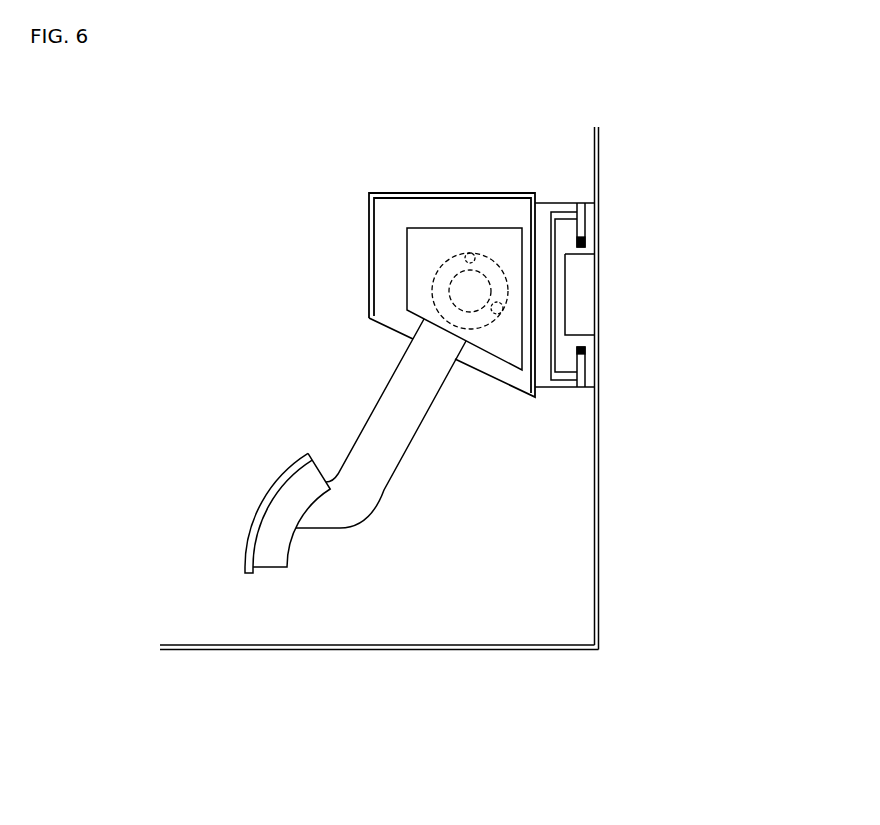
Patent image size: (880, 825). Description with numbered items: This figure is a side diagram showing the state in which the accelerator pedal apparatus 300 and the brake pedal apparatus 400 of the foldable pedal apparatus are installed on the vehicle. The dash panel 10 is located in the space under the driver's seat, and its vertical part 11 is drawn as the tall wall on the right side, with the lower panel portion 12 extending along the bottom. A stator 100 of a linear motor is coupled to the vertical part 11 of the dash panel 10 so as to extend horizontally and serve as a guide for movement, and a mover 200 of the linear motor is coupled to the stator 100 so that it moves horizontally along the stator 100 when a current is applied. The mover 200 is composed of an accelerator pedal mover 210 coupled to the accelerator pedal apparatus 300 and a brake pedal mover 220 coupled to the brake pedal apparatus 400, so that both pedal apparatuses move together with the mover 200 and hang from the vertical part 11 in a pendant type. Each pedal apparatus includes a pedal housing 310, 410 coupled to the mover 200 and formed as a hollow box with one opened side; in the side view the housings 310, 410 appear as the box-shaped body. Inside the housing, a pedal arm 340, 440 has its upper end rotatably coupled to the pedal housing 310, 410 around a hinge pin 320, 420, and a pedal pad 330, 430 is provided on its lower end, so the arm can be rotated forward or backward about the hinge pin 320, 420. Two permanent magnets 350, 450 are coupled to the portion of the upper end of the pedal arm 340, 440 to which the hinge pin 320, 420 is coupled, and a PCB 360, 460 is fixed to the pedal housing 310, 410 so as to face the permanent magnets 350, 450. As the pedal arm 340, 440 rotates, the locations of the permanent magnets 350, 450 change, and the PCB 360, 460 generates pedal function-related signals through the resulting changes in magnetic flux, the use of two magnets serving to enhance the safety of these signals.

The dash panel 10 is at (417, 423).
The vertical part 11 is at (600, 480).
The bottom of cabinet 12 is at (462, 650).
The stator 100 is at (558, 298).
The mover 200 is at (657, 285).
The accelerator pedal mover 210 is at (657, 285).
The brake pedal mover 220 is at (562, 203).
The accelerator pedal apparatus 300 is at (291, 446).
The brake pedal apparatus 400 is at (291, 446).
The pedal housing 310 is at (391, 295).
The pedal housing 410 is at (368, 200).
The hinge pin 320 is at (355, 291).
The hinge pin 420 is at (470, 290).
The pedal pad 330 is at (223, 513).
The pedal pad 430 is at (262, 510).
The pedal arm 340 is at (309, 423).
The pedal arm 440 is at (375, 437).
The permanent magnet 350 is at (495, 208).
The permanent magnet 450 is at (497, 302).
The PCB 360 is at (381, 299).
The PCB 460 is at (425, 262).